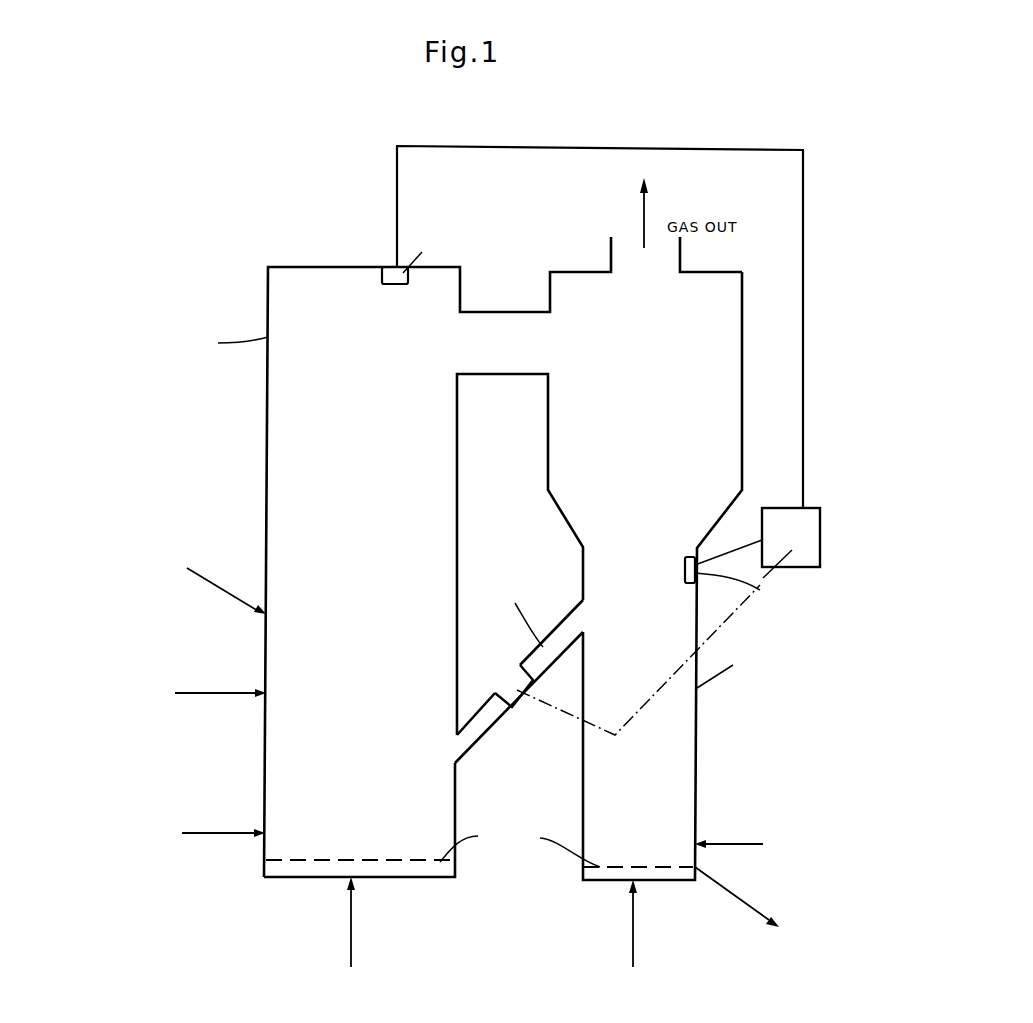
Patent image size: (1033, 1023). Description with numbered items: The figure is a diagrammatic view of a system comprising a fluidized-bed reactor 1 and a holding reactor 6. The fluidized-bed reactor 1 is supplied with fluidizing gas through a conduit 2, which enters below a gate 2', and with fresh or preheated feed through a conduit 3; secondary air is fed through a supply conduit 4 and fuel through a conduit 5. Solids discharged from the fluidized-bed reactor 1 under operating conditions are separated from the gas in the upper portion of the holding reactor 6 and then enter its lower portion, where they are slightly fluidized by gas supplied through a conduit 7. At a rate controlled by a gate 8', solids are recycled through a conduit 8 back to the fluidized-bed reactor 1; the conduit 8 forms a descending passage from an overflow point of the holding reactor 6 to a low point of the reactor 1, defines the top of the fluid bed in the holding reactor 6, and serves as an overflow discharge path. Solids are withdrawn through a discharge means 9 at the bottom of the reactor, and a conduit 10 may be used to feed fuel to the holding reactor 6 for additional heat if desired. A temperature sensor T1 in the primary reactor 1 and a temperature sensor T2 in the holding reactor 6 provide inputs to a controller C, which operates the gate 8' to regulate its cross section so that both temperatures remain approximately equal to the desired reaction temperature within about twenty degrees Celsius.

The fluidized-bed reactor 1 is at (266, 455).
The conduit 2 is at (362, 943).
The gate 2' is at (463, 875).
The conduit 3 is at (215, 585).
The supply conduit 4 is at (188, 692).
The conduit 5 is at (201, 834).
The holding reactor 6 is at (696, 607).
The conduit 7 is at (632, 930).
The conduit 8 is at (519, 664).
The gate 8' is at (627, 660).
The discharge means 9 is at (740, 900).
The conduit 10 is at (734, 843).
The temperature sensor T1 is at (388, 289).
The temperature sensor T2 is at (690, 556).
The controller C is at (816, 510).